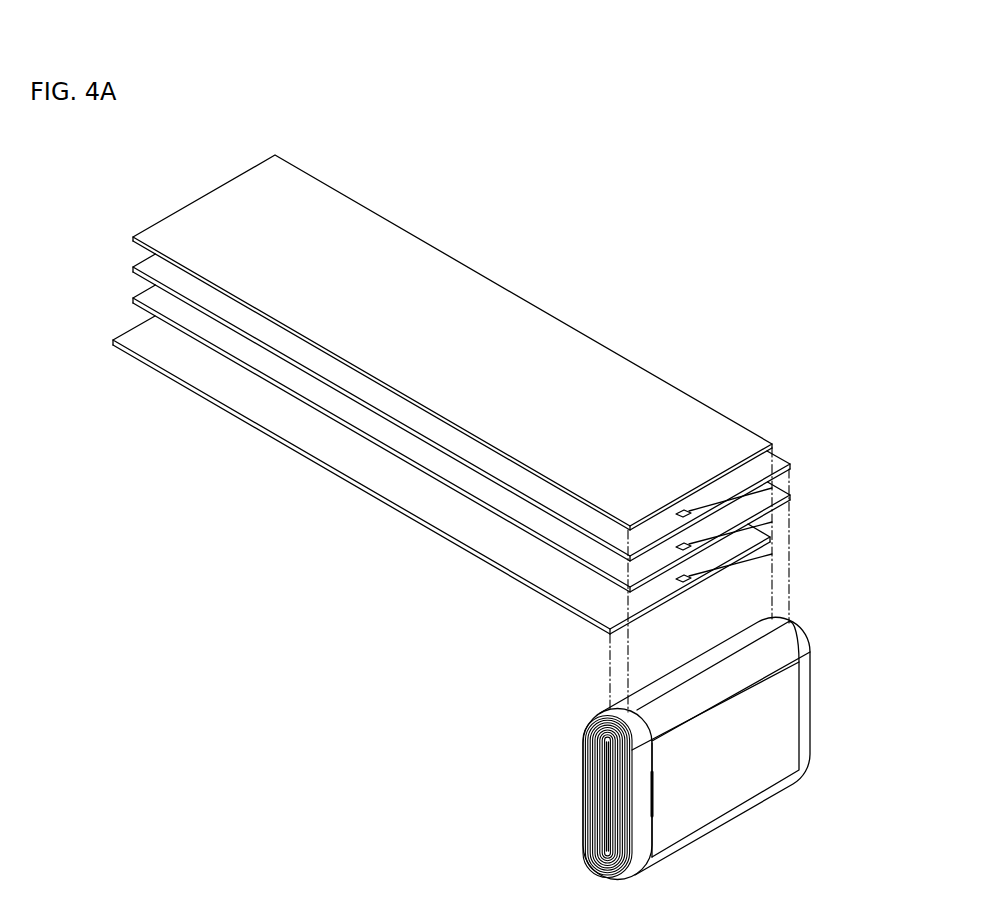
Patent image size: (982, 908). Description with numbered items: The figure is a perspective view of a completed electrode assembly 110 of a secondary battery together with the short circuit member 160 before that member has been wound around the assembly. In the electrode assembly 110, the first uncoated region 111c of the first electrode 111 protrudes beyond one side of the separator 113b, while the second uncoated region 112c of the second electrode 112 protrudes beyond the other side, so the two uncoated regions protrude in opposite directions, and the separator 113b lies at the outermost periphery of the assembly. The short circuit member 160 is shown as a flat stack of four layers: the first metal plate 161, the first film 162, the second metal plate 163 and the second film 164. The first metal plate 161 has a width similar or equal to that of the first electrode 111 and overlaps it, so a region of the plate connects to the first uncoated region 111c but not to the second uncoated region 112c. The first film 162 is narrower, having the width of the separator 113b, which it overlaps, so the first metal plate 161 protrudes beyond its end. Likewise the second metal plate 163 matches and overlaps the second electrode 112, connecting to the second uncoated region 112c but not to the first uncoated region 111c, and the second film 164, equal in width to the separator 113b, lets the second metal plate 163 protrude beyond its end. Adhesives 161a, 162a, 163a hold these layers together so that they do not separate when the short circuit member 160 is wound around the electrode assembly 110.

The short circuit member 160 is at (530, 273).
The first metal plate 161 is at (142, 336).
The first film 162 is at (147, 296).
The second metal plate 163 is at (143, 260).
The second film 164 is at (155, 231).
The adhesive 161a is at (684, 577).
The adhesive 162a is at (684, 545).
The adhesive 163a is at (684, 512).
The second electrode 112 is at (822, 685).
The second uncoated region 112c is at (808, 721).
The electrode assembly 110 is at (739, 823).
The first electrode 111 is at (590, 782).
The first uncoated region 111c is at (641, 814).
The separator 113b is at (685, 817).